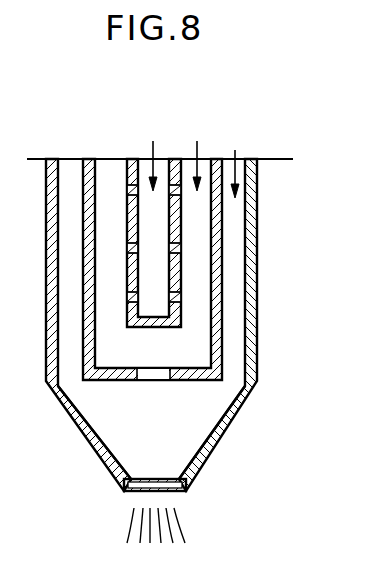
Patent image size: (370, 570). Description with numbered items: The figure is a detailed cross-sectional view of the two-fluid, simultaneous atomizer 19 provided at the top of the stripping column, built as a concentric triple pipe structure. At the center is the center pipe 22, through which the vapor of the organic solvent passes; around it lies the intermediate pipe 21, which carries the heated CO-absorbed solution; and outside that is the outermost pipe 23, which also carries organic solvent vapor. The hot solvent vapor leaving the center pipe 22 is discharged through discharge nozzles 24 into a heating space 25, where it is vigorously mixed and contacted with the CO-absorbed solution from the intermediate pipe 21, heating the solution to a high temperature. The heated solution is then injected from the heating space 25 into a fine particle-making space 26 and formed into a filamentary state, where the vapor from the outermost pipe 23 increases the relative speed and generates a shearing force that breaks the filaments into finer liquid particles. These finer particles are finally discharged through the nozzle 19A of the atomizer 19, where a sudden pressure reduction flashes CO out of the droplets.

The two-fluid simultaneous atomizer 19 is at (262, 247).
The nozzle 19A is at (140, 486).
The intermediate pipe 21 is at (197, 141).
The center pipe 22 is at (153, 141).
The outermost pipe 23 is at (235, 150).
The discharge nozzles 24 is at (126, 240).
The heating space 25 is at (195, 351).
The fine particle-making space 26 is at (188, 452).